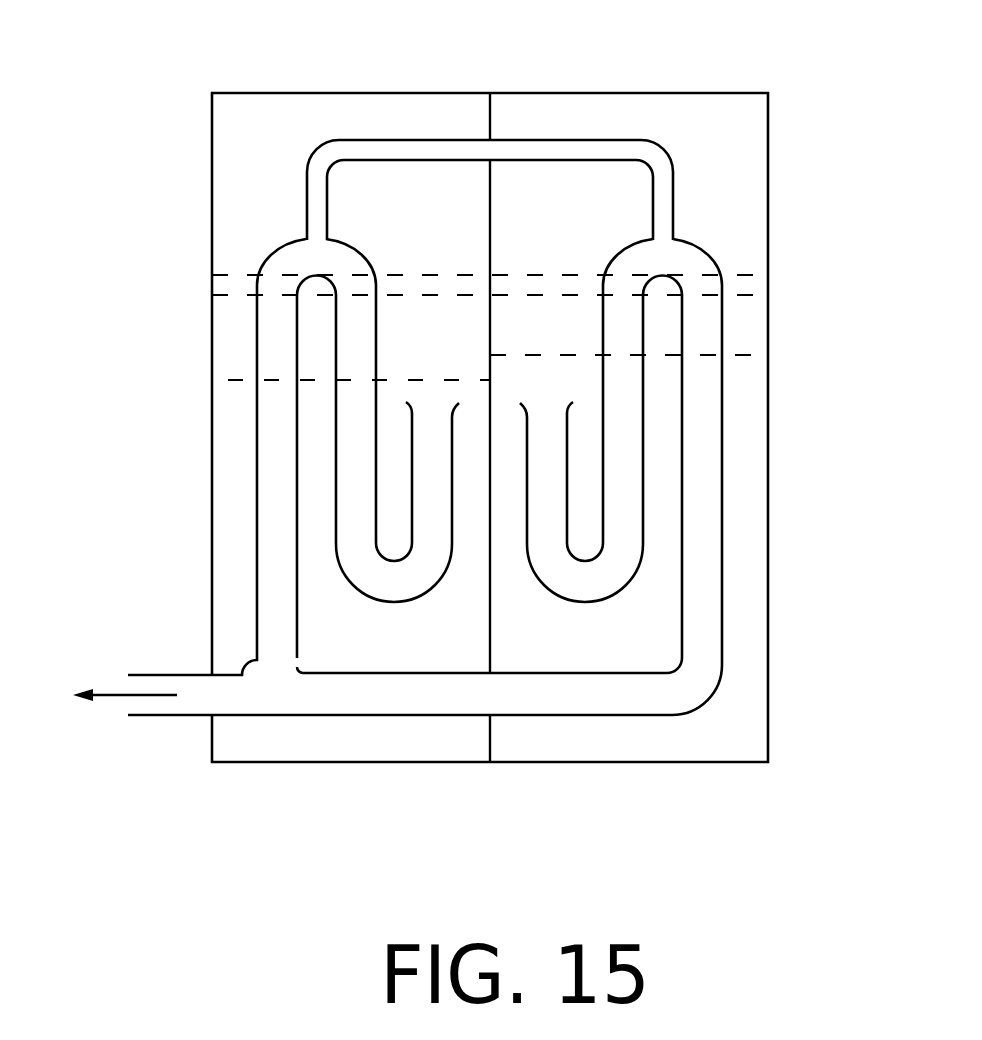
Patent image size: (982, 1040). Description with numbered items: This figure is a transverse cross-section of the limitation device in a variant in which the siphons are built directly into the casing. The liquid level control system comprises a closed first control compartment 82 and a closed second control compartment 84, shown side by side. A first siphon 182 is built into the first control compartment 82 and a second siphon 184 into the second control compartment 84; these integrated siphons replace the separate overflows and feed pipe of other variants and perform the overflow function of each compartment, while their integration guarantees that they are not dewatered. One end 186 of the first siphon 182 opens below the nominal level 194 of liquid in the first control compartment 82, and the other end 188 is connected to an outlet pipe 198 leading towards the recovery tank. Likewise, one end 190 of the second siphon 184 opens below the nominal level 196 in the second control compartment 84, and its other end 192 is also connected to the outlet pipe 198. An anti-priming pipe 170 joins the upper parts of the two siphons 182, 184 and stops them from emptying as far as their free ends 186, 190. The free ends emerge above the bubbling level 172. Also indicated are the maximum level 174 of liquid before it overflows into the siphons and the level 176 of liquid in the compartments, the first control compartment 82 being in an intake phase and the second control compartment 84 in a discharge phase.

The first control compartment 82 is at (366, 108).
The second control compartment 84 is at (646, 108).
The anti-priming pipe 170 is at (662, 195).
The bubbling level 172 is at (480, 450).
The maximum level 174 is at (237, 275).
The level of liquid 176 is at (213, 295).
The first siphon 182 is at (350, 540).
The second siphon 184 is at (623, 510).
The end of the first siphon 186 is at (457, 443).
The other end of the first siphon 188 is at (253, 667).
The end of the second siphon 190 is at (573, 405).
The other end of the second siphon 192 is at (718, 668).
The nominal level 194 is at (213, 380).
The nominal level 196 is at (749, 355).
The outlet pipe 198 is at (167, 716).